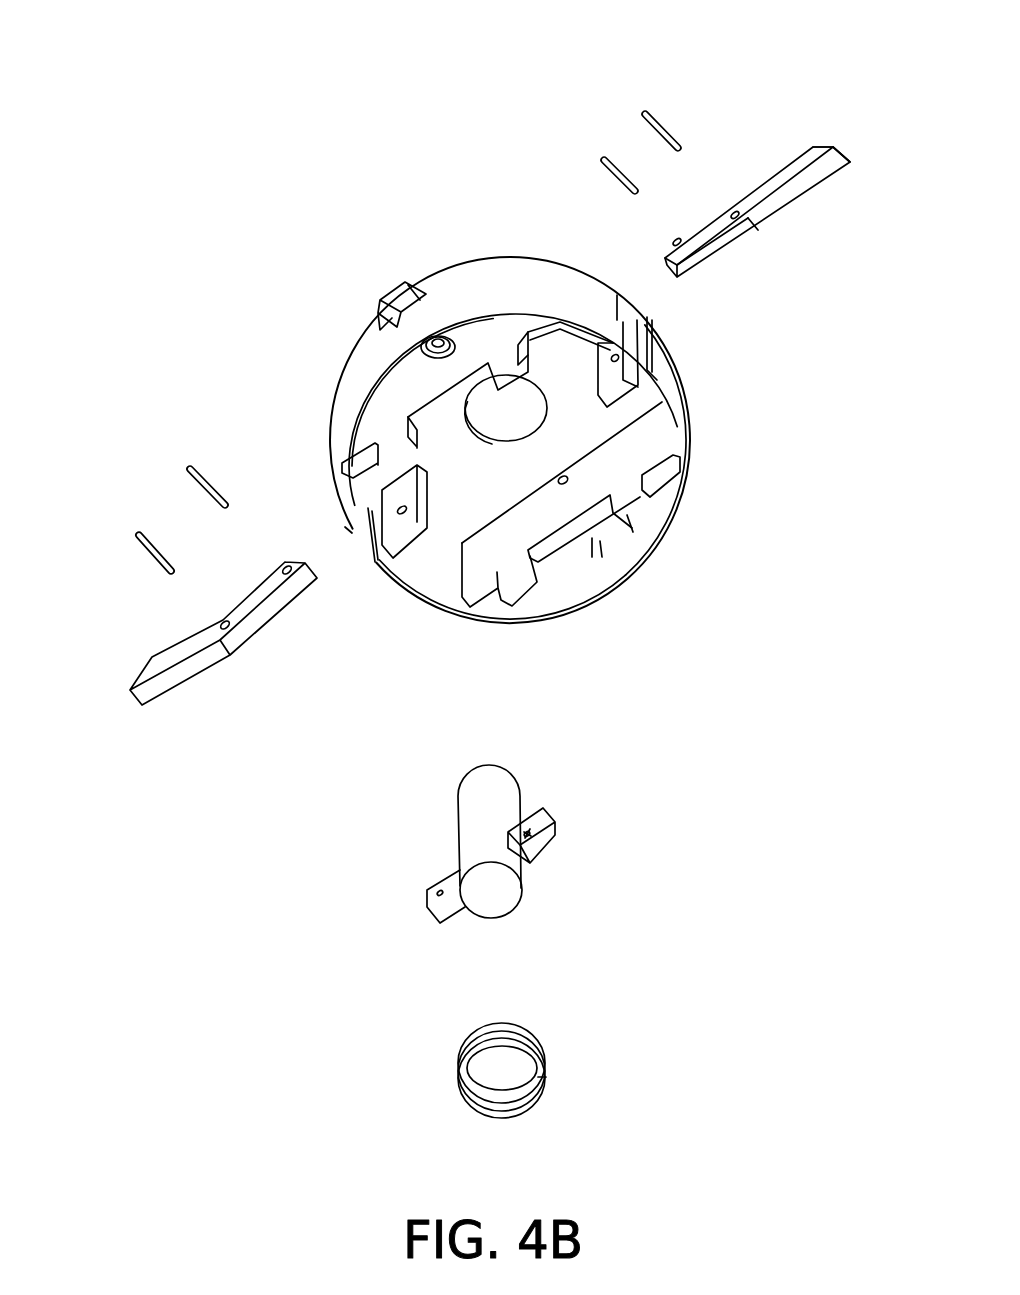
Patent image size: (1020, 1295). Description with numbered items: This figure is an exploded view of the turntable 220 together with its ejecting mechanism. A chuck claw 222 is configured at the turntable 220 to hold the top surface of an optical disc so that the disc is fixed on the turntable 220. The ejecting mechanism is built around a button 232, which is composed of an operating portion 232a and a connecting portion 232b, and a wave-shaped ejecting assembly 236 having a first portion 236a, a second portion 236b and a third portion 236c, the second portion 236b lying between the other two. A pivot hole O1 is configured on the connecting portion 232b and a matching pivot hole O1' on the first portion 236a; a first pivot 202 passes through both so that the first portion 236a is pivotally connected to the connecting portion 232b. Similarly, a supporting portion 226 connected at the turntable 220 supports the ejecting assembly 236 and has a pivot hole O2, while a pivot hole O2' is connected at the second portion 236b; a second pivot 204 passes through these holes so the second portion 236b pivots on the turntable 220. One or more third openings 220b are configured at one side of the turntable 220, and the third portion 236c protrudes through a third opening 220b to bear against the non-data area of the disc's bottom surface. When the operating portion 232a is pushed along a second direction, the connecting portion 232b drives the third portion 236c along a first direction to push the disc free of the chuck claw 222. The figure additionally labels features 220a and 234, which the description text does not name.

The first pivot 202 is at (600, 157).
The second pivot 204 is at (634, 100).
The turntable 220 is at (345, 378).
The inner wall of housing 220a is at (653, 533).
The third opening 220b is at (367, 548).
The chuck claw 222 is at (392, 293).
The supporting portion 226 is at (569, 463).
The button 232 is at (555, 783).
The operating portion 232a is at (487, 773).
The connecting portion 232b is at (585, 811).
The spring 234 is at (540, 1066).
The ejecting assembly 236 is at (521, 375).
The first portion 236a is at (670, 274).
The second portion 236b is at (791, 186).
The third portion 236c is at (842, 160).
The pivot hole O1 is at (545, 882).
The pivot hole O1' is at (610, 219).
The pivot hole O2 is at (673, 345).
The pivot hole O2' is at (752, 132).